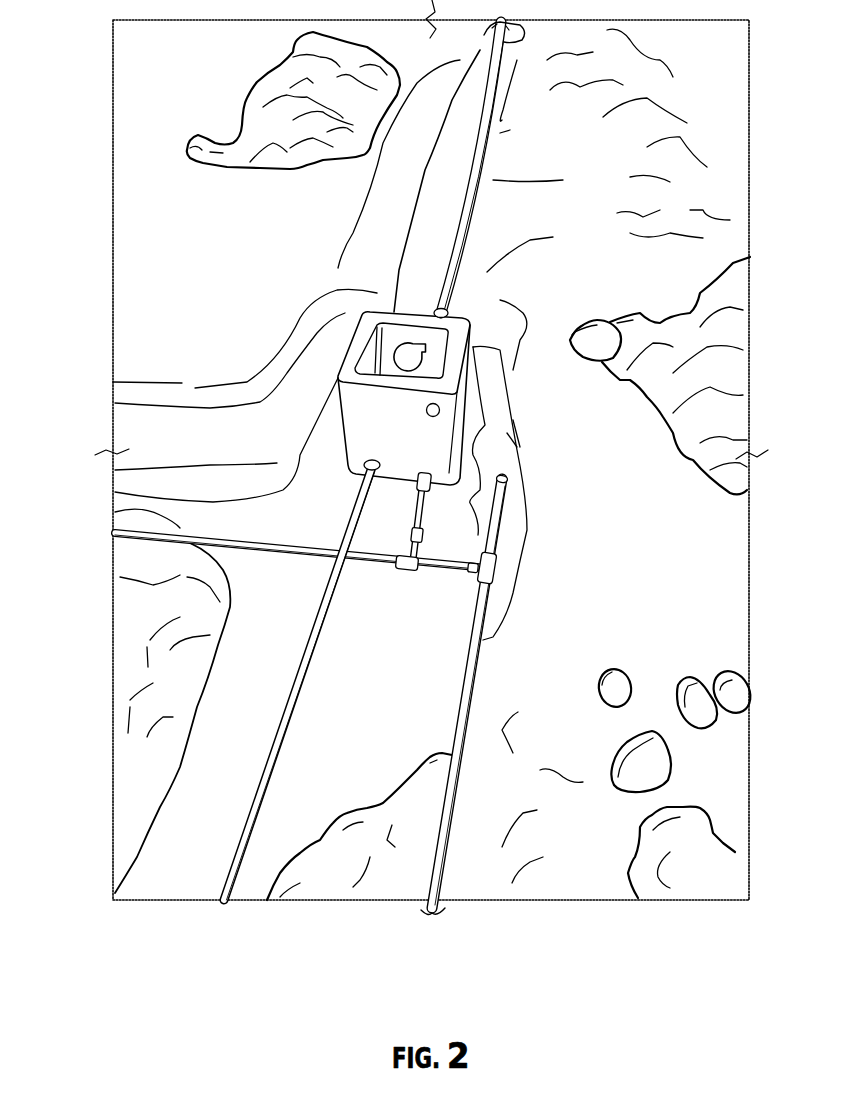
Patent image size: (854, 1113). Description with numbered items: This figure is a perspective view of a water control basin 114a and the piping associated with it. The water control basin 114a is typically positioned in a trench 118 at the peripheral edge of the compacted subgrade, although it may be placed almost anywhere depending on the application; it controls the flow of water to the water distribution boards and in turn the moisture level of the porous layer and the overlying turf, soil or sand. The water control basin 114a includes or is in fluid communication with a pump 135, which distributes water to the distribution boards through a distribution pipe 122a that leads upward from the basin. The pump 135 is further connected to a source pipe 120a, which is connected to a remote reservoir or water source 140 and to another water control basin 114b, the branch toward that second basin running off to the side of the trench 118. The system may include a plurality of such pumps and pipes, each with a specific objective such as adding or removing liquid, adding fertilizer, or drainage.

The water control basin 114a is at (412, 373).
The water control basin 114b is at (112, 528).
The trench 118 is at (232, 690).
The source pipe 120a is at (492, 570).
The distribution pipe 122a is at (487, 124).
The pump 135 is at (413, 344).
The remote reservoir or water source 140 is at (459, 714).